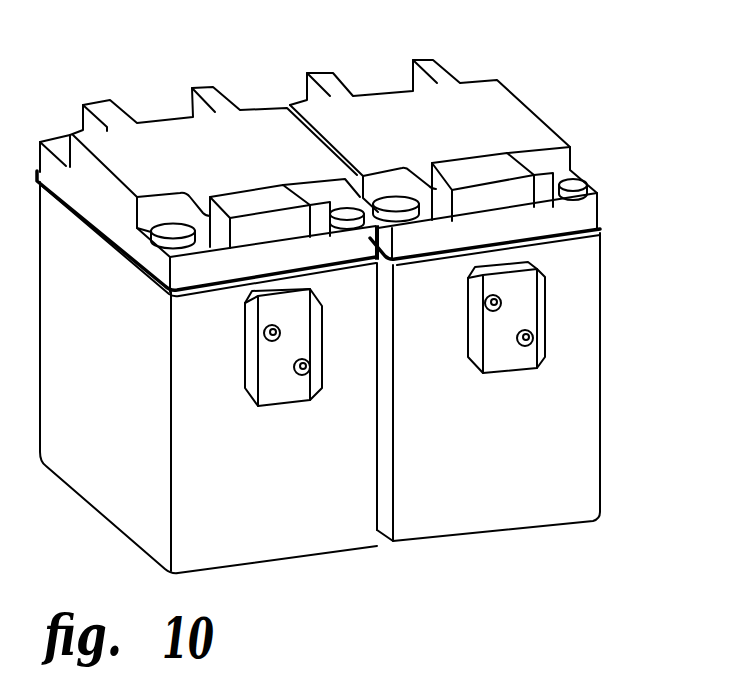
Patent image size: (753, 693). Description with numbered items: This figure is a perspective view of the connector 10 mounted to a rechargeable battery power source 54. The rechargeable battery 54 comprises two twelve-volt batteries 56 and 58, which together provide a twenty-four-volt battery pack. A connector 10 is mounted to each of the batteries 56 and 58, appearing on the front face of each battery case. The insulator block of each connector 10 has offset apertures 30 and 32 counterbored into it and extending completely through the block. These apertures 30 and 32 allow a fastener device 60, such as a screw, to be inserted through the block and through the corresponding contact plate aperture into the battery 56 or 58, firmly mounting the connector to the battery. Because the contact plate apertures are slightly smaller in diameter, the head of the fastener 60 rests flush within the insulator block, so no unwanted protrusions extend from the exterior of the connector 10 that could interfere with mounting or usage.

The terminal connector plate 10 is at (498, 362).
The offset aperture 30 is at (497, 300).
The offset aperture 32 is at (525, 343).
The rechargeable battery power source 54 is at (490, 78).
The battery 56 is at (511, 537).
The battery 58 is at (274, 575).
The fastener 60 is at (493, 305).